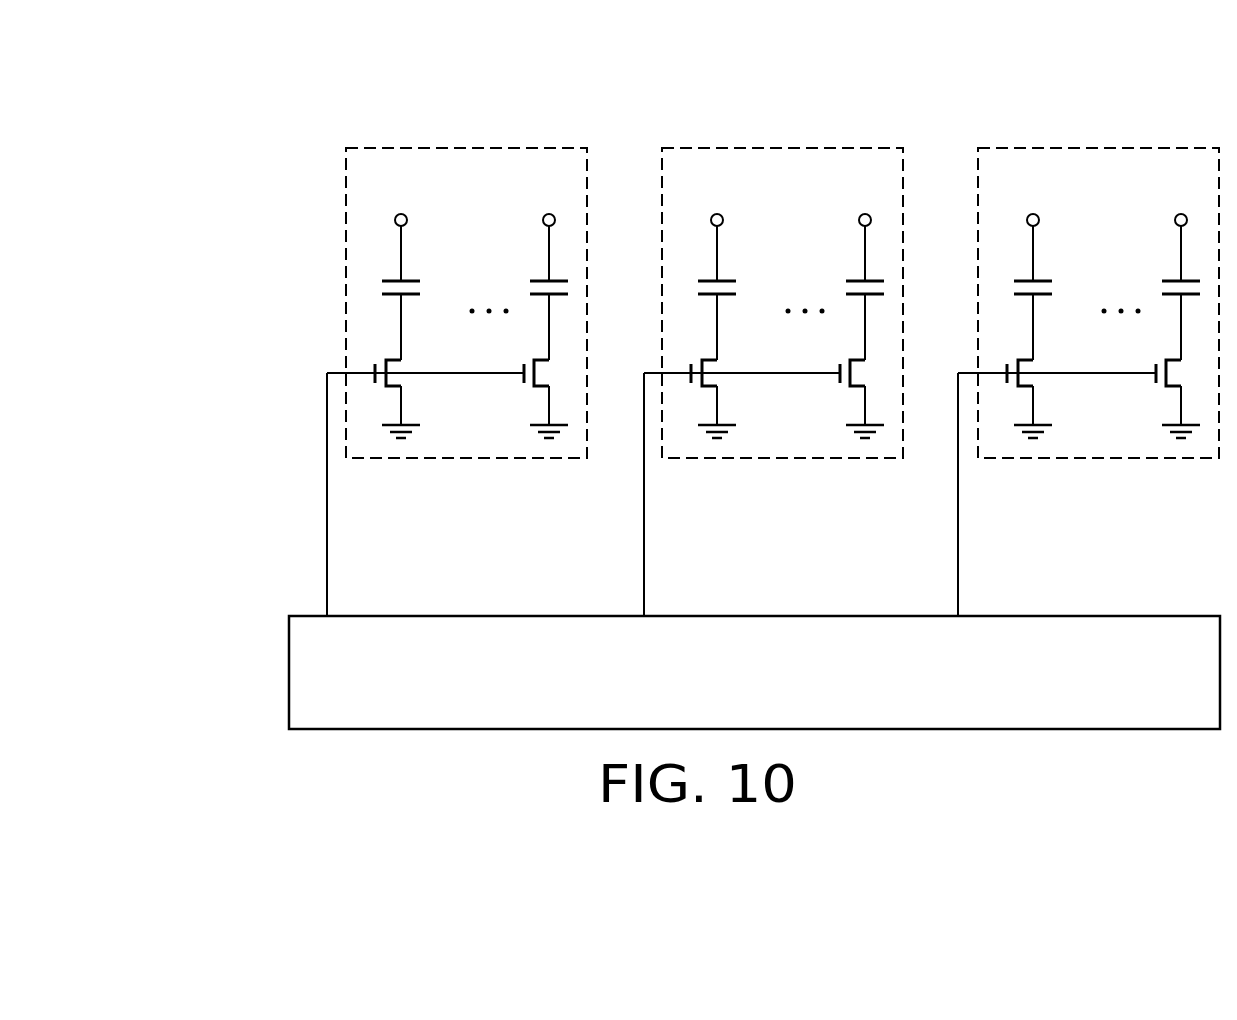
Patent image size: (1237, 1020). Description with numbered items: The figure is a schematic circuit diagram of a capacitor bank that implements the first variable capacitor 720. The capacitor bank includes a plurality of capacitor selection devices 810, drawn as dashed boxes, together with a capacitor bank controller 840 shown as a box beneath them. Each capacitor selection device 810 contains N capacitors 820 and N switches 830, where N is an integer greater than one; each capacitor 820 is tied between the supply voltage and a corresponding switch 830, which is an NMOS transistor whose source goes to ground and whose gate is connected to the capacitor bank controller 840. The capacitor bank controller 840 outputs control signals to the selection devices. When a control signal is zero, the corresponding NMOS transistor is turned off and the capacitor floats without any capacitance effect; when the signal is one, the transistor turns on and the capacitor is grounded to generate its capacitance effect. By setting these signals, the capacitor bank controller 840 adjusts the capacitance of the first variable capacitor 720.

The first variable capacitor 720 is at (237, 118).
The capacitor selection device 810 is at (478, 147).
The capacitor 820 is at (382, 282).
The switch 830 is at (375, 366).
The capacitor bank controller 840 is at (576, 616).